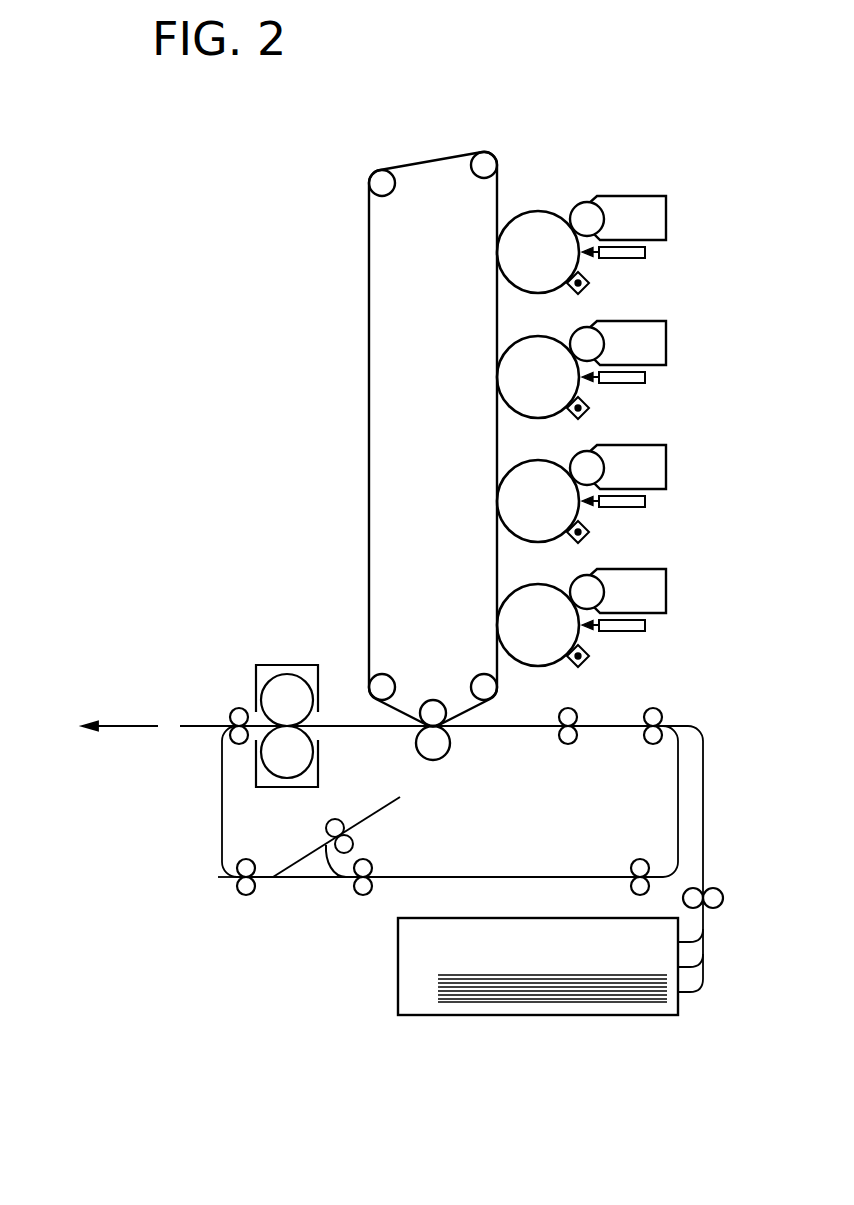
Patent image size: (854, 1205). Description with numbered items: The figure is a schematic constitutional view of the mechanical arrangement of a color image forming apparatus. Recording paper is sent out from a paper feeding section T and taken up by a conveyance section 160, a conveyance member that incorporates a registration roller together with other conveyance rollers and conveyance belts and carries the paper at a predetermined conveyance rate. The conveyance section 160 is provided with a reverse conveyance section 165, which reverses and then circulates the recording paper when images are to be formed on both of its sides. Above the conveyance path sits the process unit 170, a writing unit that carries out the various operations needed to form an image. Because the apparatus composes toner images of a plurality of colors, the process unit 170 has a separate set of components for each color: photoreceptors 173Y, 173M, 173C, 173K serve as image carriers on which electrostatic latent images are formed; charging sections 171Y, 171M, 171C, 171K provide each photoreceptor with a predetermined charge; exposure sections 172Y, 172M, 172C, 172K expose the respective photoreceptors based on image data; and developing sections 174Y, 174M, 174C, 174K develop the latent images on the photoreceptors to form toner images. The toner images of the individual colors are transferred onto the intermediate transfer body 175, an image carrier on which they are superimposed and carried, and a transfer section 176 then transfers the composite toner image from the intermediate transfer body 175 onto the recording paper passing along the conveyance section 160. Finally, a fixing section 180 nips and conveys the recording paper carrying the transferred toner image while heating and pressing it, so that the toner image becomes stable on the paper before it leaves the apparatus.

The process unit 170 is at (540, 108).
The intermediate transfer body 175 is at (421, 163).
The photoreceptor 173Y is at (539, 211).
The photoreceptor 173M is at (538, 336).
The photoreceptor 173C is at (538, 460).
The photoreceptor 173K is at (538, 584).
The developing section 174Y is at (641, 196).
The developing section 174M is at (666, 322).
The developing section 174C is at (666, 447).
The developing section 174K is at (666, 570).
The exposure section 172Y is at (646, 254).
The exposure section 172M is at (646, 379).
The exposure section 172C is at (646, 503).
The exposure section 172K is at (646, 627).
The charging section 171Y is at (585, 274).
The charging section 171M is at (585, 399).
The charging section 171C is at (585, 523).
The charging section 171K is at (588, 655).
The transfer section 176 is at (446, 756).
The fixing section 180 is at (281, 665).
The conveyance section 160 is at (533, 856).
The reverse conveyance section 165 is at (367, 818).
The paper feeding section T is at (398, 967).